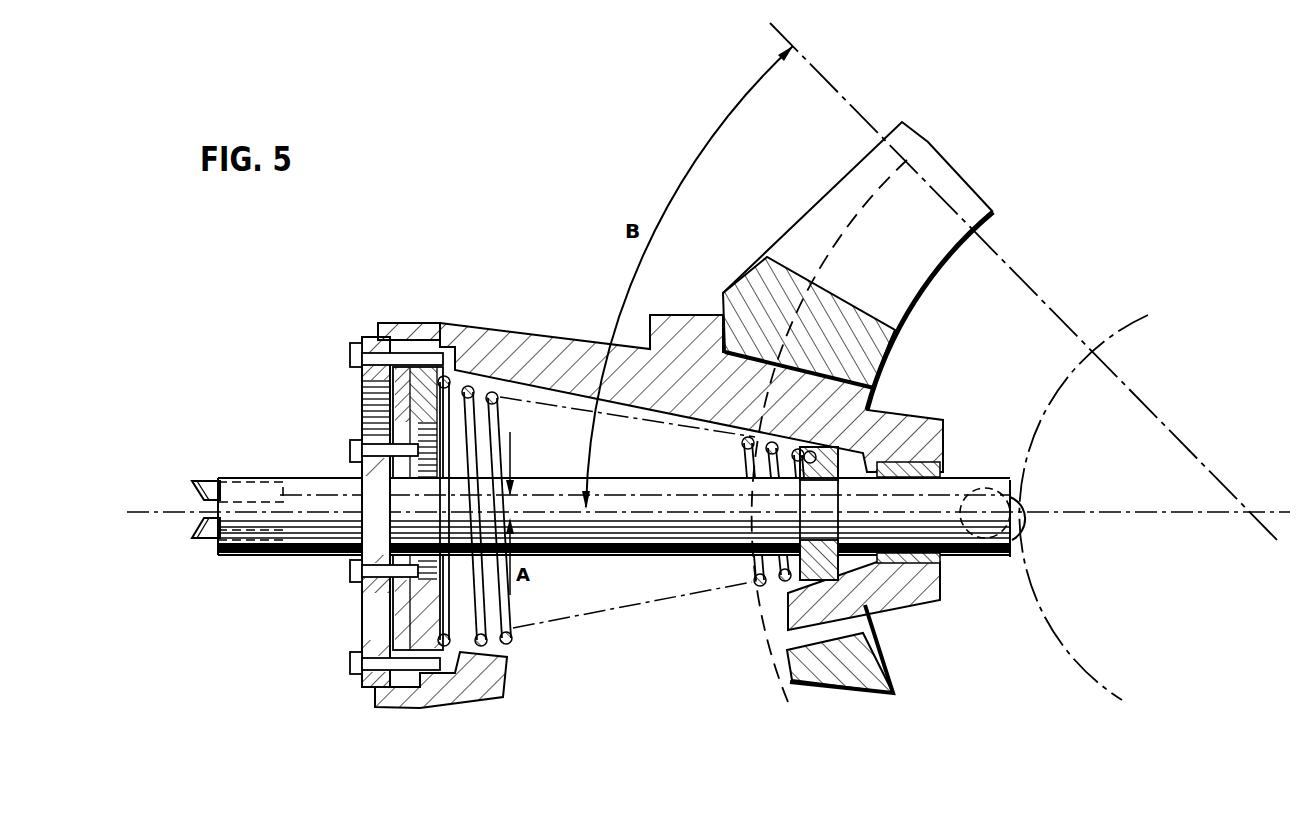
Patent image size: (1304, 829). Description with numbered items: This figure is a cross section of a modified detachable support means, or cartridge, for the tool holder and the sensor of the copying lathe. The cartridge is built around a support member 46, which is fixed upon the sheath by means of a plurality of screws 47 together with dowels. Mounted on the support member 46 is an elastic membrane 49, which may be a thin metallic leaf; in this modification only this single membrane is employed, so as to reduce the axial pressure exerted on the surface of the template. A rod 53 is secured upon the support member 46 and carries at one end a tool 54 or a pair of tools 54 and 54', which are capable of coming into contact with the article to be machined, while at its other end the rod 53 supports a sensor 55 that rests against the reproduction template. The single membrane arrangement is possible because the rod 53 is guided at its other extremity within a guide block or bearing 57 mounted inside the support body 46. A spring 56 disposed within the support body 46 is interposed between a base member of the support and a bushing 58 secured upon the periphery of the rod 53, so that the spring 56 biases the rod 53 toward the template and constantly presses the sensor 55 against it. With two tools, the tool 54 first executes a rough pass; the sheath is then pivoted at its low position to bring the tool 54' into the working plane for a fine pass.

The support member 46 is at (517, 340).
The screws 47 is at (350, 348).
The elastic membrane 49 is at (390, 607).
The rod 53 is at (330, 538).
The tool 54 is at (590, 480).
The tool 54' is at (219, 534).
The sensor 55 is at (1024, 522).
The spring 56 is at (492, 425).
The guide block or bearing 57 is at (945, 474).
The bushing 58 is at (838, 462).